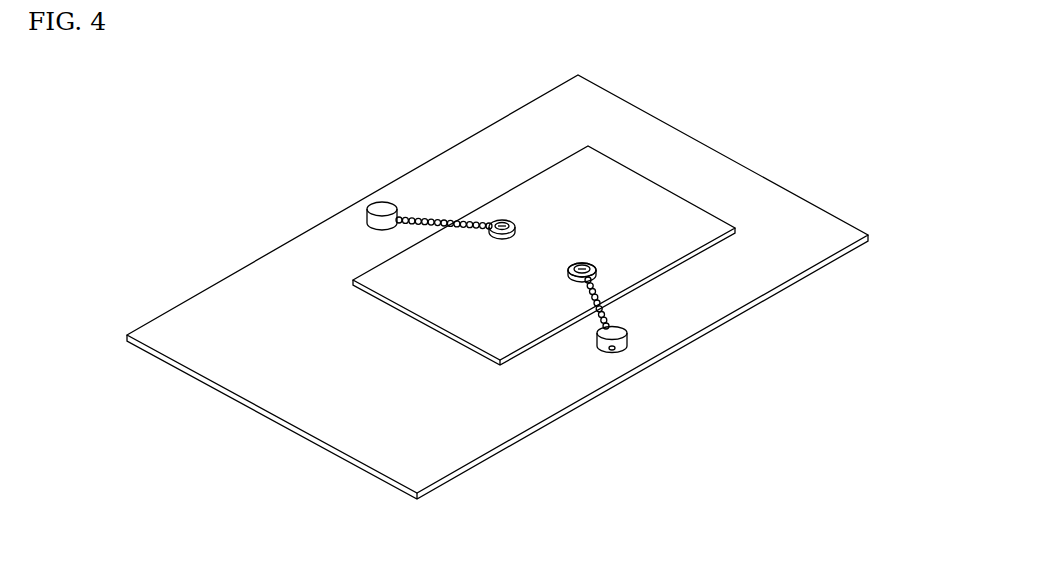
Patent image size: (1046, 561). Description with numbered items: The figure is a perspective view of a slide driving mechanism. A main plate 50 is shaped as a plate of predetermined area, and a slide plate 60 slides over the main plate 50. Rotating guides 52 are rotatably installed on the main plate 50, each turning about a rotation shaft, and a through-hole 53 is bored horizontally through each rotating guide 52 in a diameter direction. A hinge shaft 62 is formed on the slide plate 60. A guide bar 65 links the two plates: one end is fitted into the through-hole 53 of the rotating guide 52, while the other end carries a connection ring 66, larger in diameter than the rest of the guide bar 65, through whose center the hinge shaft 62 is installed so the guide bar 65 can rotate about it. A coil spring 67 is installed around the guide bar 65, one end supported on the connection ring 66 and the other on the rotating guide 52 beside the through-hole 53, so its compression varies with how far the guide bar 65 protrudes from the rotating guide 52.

The main plate 50 is at (750, 207).
The slide plate 60 is at (565, 207).
The rotating guide 52 is at (385, 204).
The through-hole 53 is at (619, 354).
The guide bar 65 is at (433, 219).
The connection ring 66 is at (597, 265).
The coil spring 67 is at (492, 220).
The hinge shaft 62 is at (585, 262).